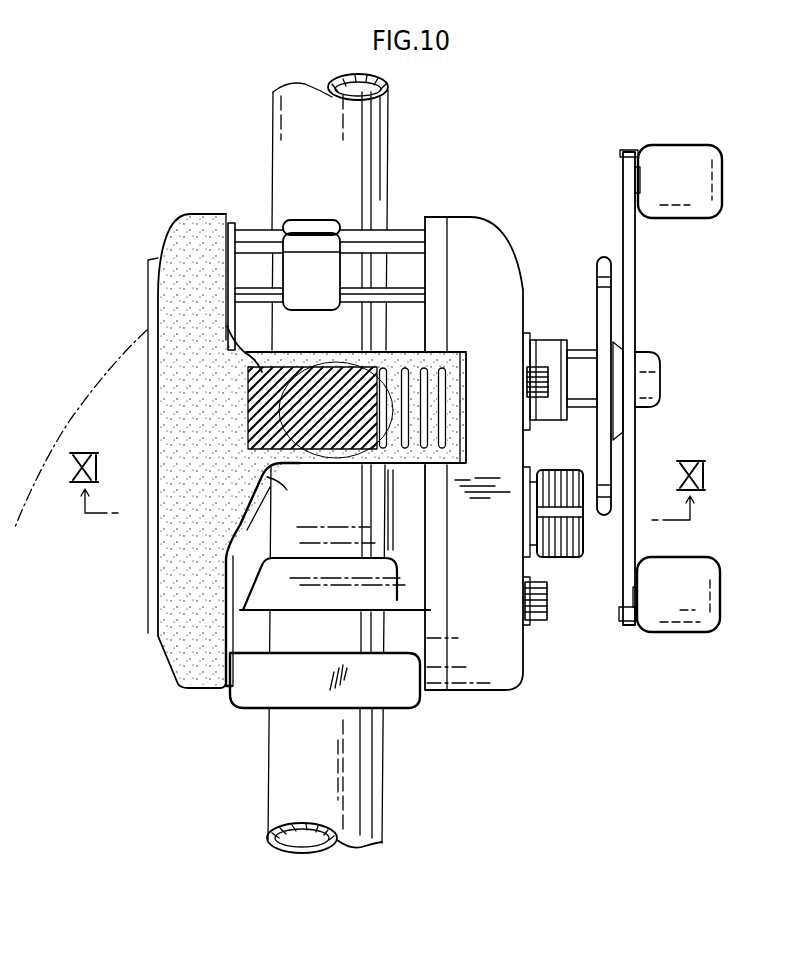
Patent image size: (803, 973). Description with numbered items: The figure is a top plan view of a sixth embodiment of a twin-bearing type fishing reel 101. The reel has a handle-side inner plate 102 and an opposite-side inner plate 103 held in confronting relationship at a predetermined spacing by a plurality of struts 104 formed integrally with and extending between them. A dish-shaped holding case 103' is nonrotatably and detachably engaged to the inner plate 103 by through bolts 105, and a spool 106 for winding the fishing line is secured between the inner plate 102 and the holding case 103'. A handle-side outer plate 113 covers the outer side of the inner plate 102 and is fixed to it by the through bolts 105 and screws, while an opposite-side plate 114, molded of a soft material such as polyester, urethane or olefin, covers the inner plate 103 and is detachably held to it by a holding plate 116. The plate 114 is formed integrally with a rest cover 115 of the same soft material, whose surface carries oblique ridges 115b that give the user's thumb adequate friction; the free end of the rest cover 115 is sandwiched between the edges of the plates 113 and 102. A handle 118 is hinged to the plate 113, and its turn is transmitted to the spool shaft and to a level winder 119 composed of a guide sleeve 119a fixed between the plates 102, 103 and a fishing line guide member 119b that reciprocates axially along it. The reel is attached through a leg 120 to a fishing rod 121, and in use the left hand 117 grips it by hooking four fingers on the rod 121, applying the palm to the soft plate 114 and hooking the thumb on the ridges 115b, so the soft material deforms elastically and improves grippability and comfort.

The reel 101 is at (447, 202).
The handle-side inner plate 102 is at (444, 230).
The opposite-side inner plate 103 is at (295, 698).
The holding case 103' is at (232, 247).
The struts 104 is at (277, 593).
The through bolts 105 is at (538, 368).
The spool 106 is at (400, 548).
The handle-side outer plate 113 is at (485, 648).
The opposite-side plate 114 is at (180, 228).
The rest cover 115 is at (400, 357).
The oblique ridges 115b is at (232, 340).
The holding plate 116 is at (152, 280).
The hand 117 is at (81, 428).
The handle 118 is at (628, 308).
The level winder 119 is at (394, 212).
The guide sleeve 119a is at (353, 260).
The fishing line guide member 119b is at (313, 233).
The leg 120 is at (362, 362).
The fishing rod 121 is at (368, 795).